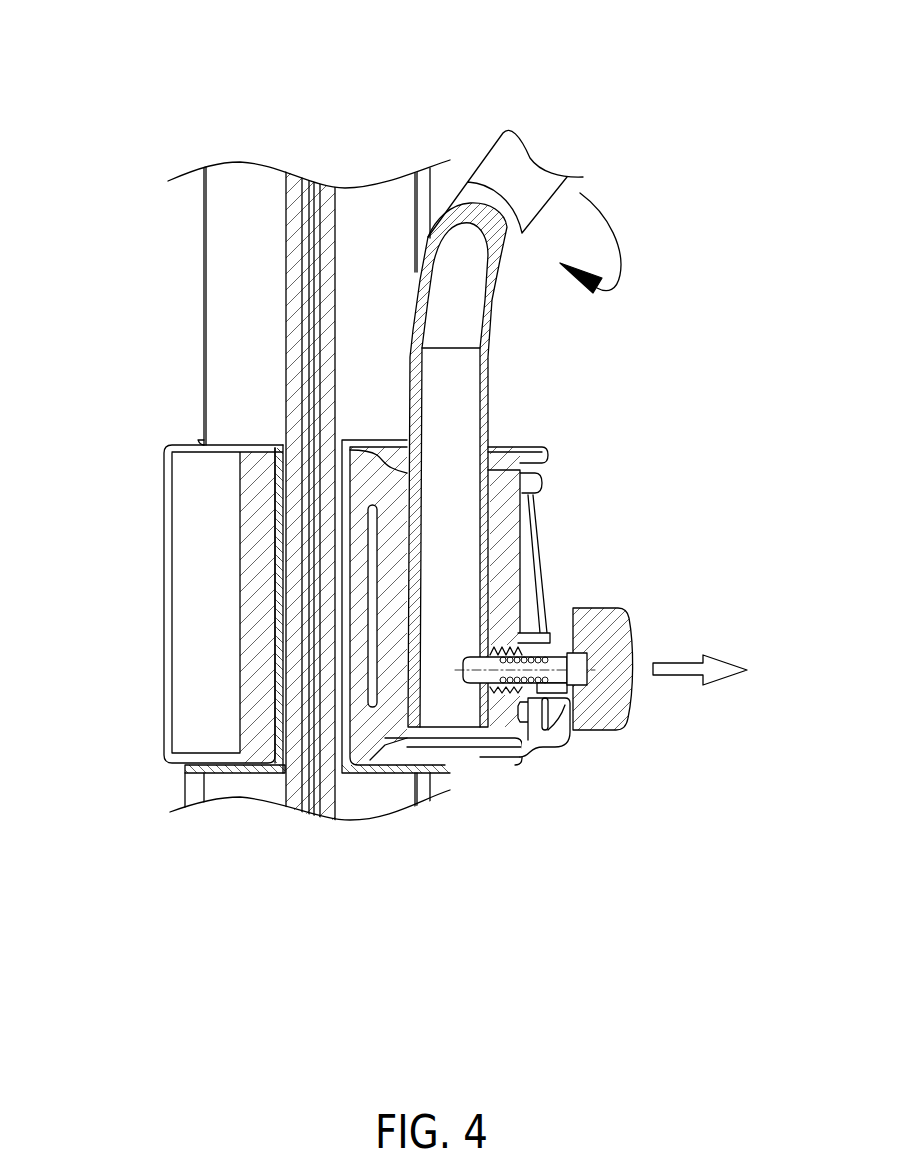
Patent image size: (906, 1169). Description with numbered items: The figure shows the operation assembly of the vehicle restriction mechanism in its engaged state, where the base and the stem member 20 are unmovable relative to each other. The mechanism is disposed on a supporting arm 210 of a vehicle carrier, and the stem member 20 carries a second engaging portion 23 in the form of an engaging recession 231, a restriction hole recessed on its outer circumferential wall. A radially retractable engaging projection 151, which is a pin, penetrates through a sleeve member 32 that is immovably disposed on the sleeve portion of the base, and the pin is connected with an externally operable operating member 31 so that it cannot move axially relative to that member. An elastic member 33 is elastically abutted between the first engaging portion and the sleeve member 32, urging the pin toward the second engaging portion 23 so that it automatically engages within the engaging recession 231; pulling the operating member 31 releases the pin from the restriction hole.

The stem member 20 is at (492, 160).
The supporting arm 210 is at (207, 252).
The second engaging portion 23 is at (446, 690).
The engaging recession 231 is at (480, 690).
The sleeve member 32 is at (583, 667).
The elastic member 33 is at (542, 740).
The operating member 31 is at (610, 717).
The engaging projection 151 is at (587, 660).